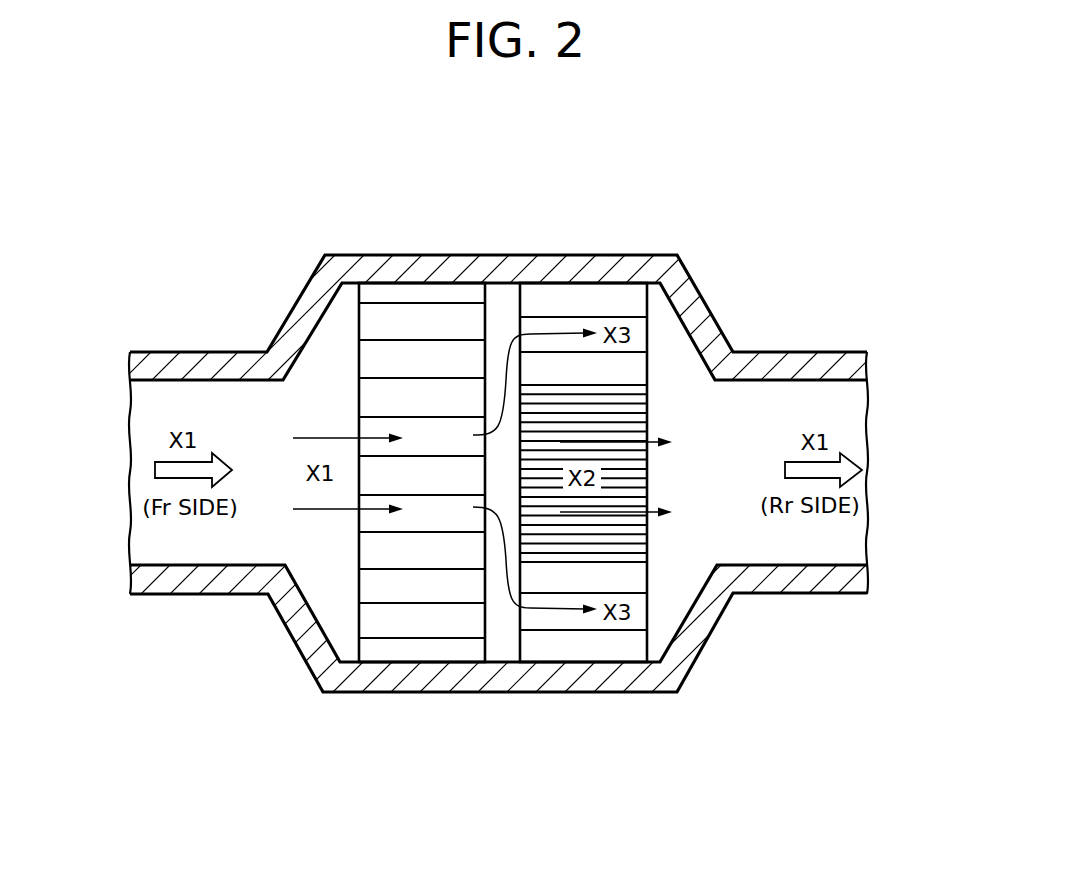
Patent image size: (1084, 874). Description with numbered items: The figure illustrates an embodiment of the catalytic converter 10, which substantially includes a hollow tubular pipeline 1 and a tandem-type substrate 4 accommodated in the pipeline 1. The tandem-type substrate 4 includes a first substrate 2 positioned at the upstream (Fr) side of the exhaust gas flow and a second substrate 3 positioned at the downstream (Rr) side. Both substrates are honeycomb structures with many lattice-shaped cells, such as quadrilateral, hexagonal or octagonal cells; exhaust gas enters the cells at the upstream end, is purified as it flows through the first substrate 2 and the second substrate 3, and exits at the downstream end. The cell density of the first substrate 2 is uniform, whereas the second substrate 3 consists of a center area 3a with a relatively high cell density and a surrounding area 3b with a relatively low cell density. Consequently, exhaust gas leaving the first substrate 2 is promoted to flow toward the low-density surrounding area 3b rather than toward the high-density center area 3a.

The pipeline 1 is at (437, 692).
The first substrate 2 is at (412, 405).
The second substrate 3 is at (608, 408).
The center area 3a is at (628, 417).
The surrounding area 3b is at (573, 322).
The tandem-type substrate 4 is at (367, 150).
The catalytic converter 10 is at (781, 212).